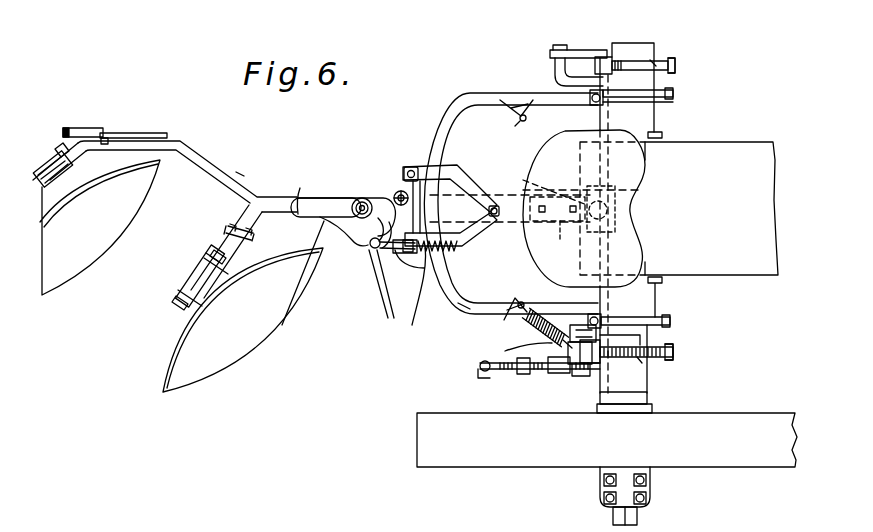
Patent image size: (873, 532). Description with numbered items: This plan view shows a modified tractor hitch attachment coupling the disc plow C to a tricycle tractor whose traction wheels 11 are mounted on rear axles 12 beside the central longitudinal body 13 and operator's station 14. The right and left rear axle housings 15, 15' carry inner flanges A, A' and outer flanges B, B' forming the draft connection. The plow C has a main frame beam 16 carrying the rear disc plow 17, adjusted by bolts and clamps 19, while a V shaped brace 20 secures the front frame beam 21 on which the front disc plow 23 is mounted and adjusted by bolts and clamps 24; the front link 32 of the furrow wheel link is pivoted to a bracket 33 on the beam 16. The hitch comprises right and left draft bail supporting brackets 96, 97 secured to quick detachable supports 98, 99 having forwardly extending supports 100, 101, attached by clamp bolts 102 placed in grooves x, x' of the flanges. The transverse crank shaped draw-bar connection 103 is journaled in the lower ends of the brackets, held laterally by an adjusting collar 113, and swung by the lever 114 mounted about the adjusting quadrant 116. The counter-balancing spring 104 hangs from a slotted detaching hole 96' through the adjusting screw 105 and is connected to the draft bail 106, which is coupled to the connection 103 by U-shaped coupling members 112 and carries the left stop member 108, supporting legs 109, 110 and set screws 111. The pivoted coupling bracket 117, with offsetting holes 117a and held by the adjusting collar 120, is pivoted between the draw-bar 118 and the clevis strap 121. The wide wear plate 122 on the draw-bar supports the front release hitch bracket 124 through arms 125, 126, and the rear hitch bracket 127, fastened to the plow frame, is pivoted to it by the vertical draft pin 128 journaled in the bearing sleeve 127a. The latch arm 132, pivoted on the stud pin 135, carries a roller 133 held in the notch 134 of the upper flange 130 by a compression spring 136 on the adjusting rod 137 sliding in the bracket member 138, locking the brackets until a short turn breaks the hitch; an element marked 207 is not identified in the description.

The traction wheels 11 is at (538, 467).
The rear axles 12 is at (637, 518).
The central longitudinal body 13 is at (730, 150).
The operator's station 14 is at (627, 251).
The right rear axle housing 15 is at (651, 218).
The left rear axle housing 15' is at (675, 124).
The main frame beam 16 is at (196, 151).
The rear disc plow 17 is at (85, 258).
The bolts and clamps 19 is at (50, 166).
The V shaped brace 20 is at (241, 227).
The front frame beam 21 is at (175, 300).
The front disc plow 23 is at (270, 322).
The bolts and clamps 24 is at (190, 283).
The front link 32 is at (88, 128).
The bracket 33 is at (133, 133).
The right draft bail supporting bracket 96 is at (574, 370).
The slotted detaching hole 96' is at (577, 315).
The left draft bail supporting bracket 97 is at (587, 50).
The right quick detachable support 98 is at (590, 378).
The left quick detachable support 99 is at (600, 58).
The right forwardly extending support 100 is at (647, 367).
The left forwardly extending support 101 is at (606, 75).
The clamp bolts 102 is at (675, 66).
The crank shaped draw-bar connection 103 is at (600, 341).
The counter-balancing spring 104 is at (505, 351).
The adjusting screw 105 is at (620, 167).
The draft bail 106 is at (467, 313).
The left stop member 108 is at (456, 156).
The right supporting leg 109 is at (530, 337).
The left supporting leg 110 is at (505, 110).
The set screws 111 is at (531, 116).
The U-shaped coupling members 112 is at (590, 98).
The adjusting collar 113 is at (550, 54).
The lever 114 is at (483, 373).
The adjusting quadrant 116 is at (548, 371).
The coupling bracket 117 is at (630, 190).
The holes 117a is at (543, 171).
The draw-bar 118 is at (472, 240).
The adjusting collar 120 is at (630, 216).
The draw-bar clevis strap 121 is at (560, 224).
The wide wear plate 122 is at (462, 187).
The front release hitch bracket 124 is at (393, 190).
The right bracket supporting arm 125 is at (463, 249).
The left bracket supporting arm 126 is at (411, 167).
The rear hitch bracket 127 is at (327, 217).
The bearing sleeve 127a is at (305, 166).
The vertical draft pin 128 is at (303, 190).
The upper horizontal flange 130 is at (368, 242).
The latch arm 132 is at (372, 256).
The roller 133 is at (298, 252).
The notch 134 is at (372, 270).
The stud pin 135 is at (377, 189).
The compression spring 136 is at (420, 268).
The adjusting rod 137 is at (385, 312).
The supporting bracket member 138 is at (457, 256).
The arch bottom 207 is at (460, 304).
The right inner flange A is at (652, 320).
The left inner flange A' is at (656, 92).
The right outer flange B is at (685, 365).
The left outer flange B' is at (684, 51).
The tractor disc plow C is at (232, 173).
The upper groove x is at (669, 37).
The lower groove x' is at (653, 373).